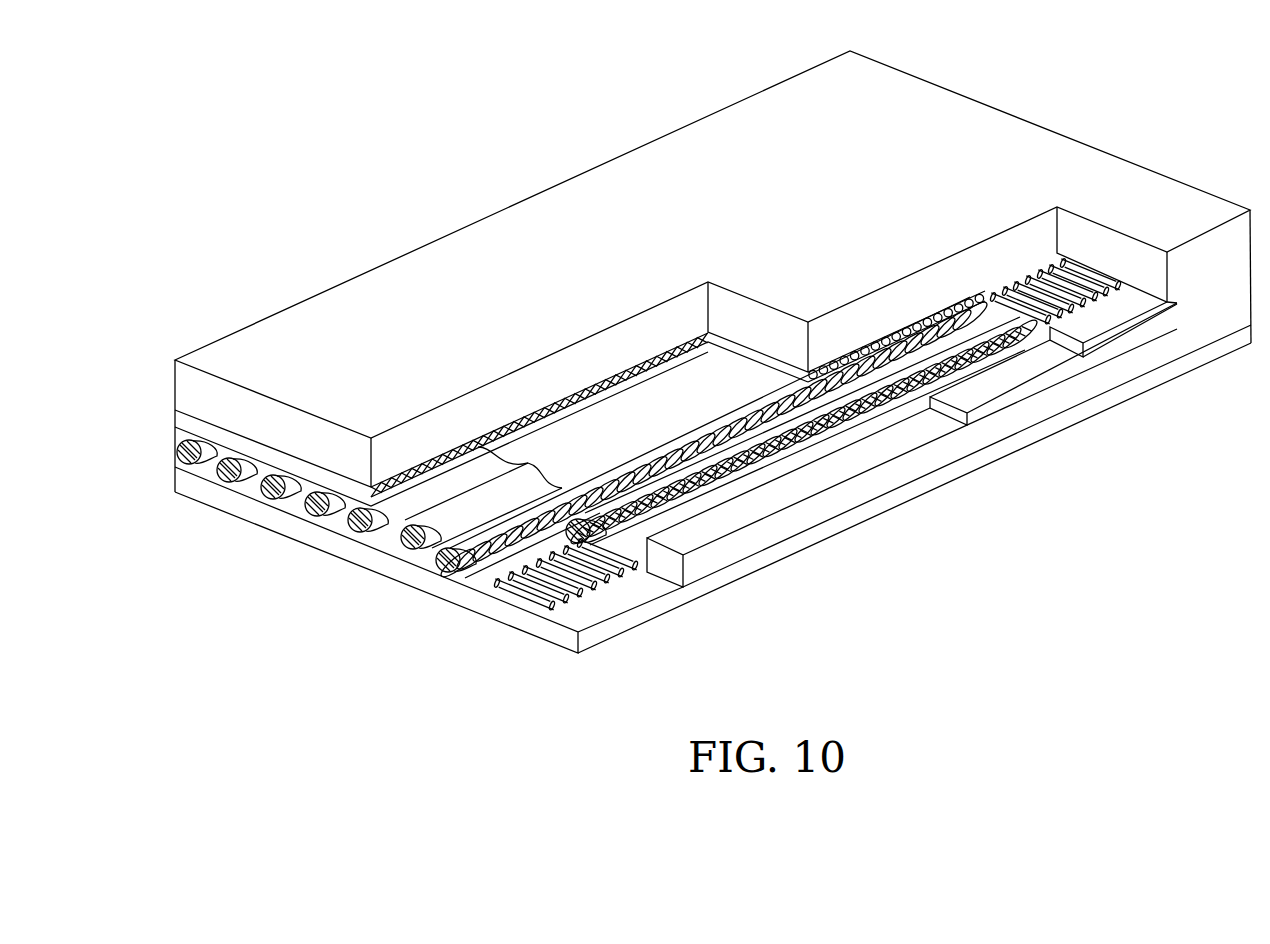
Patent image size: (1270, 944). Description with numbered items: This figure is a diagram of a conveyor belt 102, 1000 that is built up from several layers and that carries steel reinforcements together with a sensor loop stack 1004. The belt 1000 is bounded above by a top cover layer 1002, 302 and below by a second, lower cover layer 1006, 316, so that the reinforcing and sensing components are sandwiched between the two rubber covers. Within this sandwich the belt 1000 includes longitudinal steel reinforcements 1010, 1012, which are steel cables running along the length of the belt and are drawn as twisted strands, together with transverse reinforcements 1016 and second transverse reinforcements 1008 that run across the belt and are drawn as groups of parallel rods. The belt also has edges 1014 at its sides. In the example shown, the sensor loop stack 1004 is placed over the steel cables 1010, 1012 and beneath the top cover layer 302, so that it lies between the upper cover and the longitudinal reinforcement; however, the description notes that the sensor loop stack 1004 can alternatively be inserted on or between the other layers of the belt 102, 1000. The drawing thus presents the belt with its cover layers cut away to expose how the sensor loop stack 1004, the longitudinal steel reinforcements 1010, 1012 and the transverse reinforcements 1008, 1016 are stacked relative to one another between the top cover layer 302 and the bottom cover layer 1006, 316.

The conveyor belt 102 is at (668, 350).
The conveyor belt 1000 is at (251, 68).
The top cover block 1002 is at (713, 271).
The top cover layer 302 is at (637, 175).
The sensor loop stack 1004 is at (432, 500).
The bottom cover layer 1006 is at (713, 503).
The bottom cover layer 316 is at (560, 637).
The second transverse reinforcements 1008 is at (623, 577).
The longitudinal steel reinforcements 1010 is at (713, 480).
The longitudinal steel reinforcements 1012 is at (787, 407).
The edges 1014 is at (1143, 370).
The transverse reinforcements 1016 is at (1037, 290).